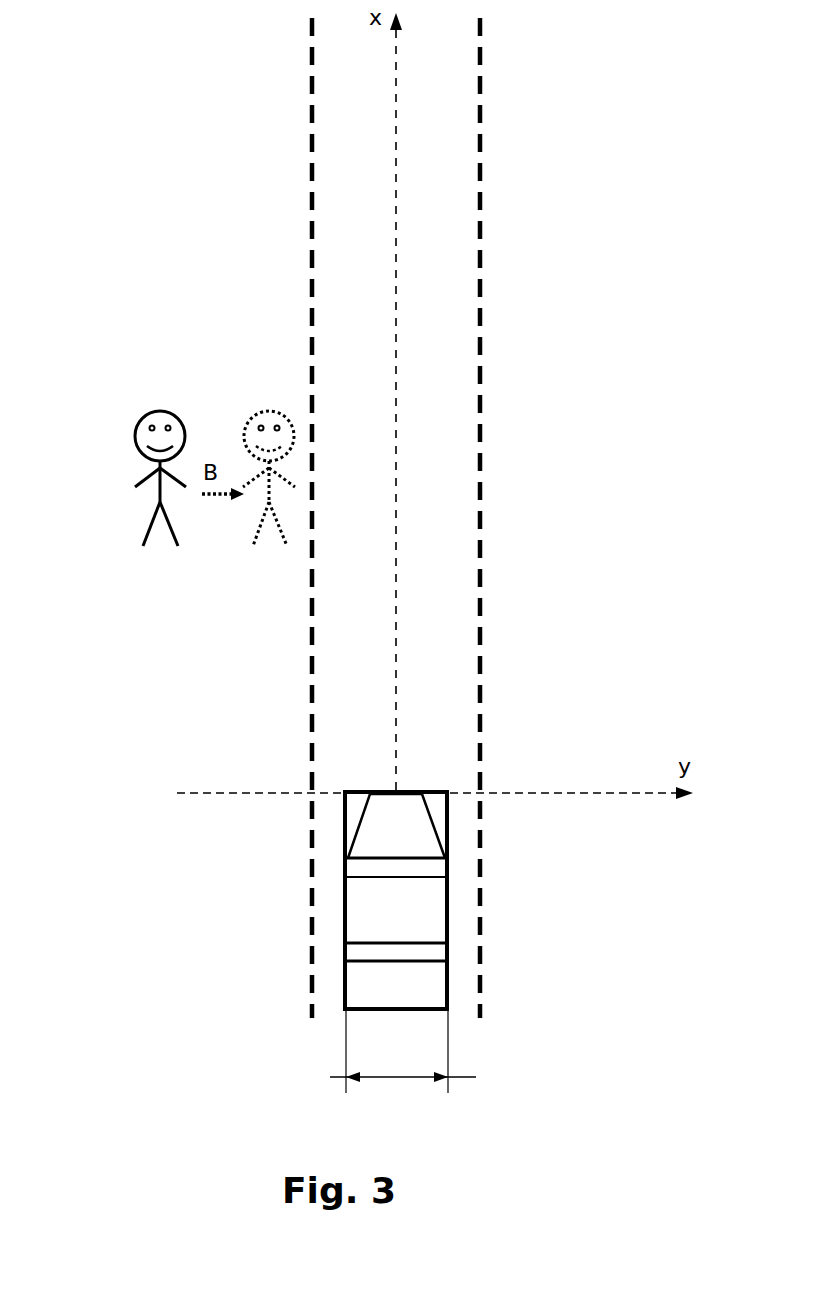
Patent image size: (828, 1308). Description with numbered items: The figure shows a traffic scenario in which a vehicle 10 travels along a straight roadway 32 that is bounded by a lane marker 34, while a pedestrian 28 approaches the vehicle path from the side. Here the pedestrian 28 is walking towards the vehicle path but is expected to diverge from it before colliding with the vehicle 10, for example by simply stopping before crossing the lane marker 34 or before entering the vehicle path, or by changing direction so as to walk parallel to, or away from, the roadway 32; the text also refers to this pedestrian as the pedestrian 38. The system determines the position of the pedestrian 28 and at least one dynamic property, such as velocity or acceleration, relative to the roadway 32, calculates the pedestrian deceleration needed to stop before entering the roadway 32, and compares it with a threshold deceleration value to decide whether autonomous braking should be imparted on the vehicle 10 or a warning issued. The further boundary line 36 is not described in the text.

The vehicle 10 is at (363, 887).
The pedestrian 28 is at (158, 412).
The roadway 32 is at (376, 518).
The lane marker 34 is at (312, 642).
The right lane marking 36 is at (481, 645).
The pedestrian 38 is at (397, 315).